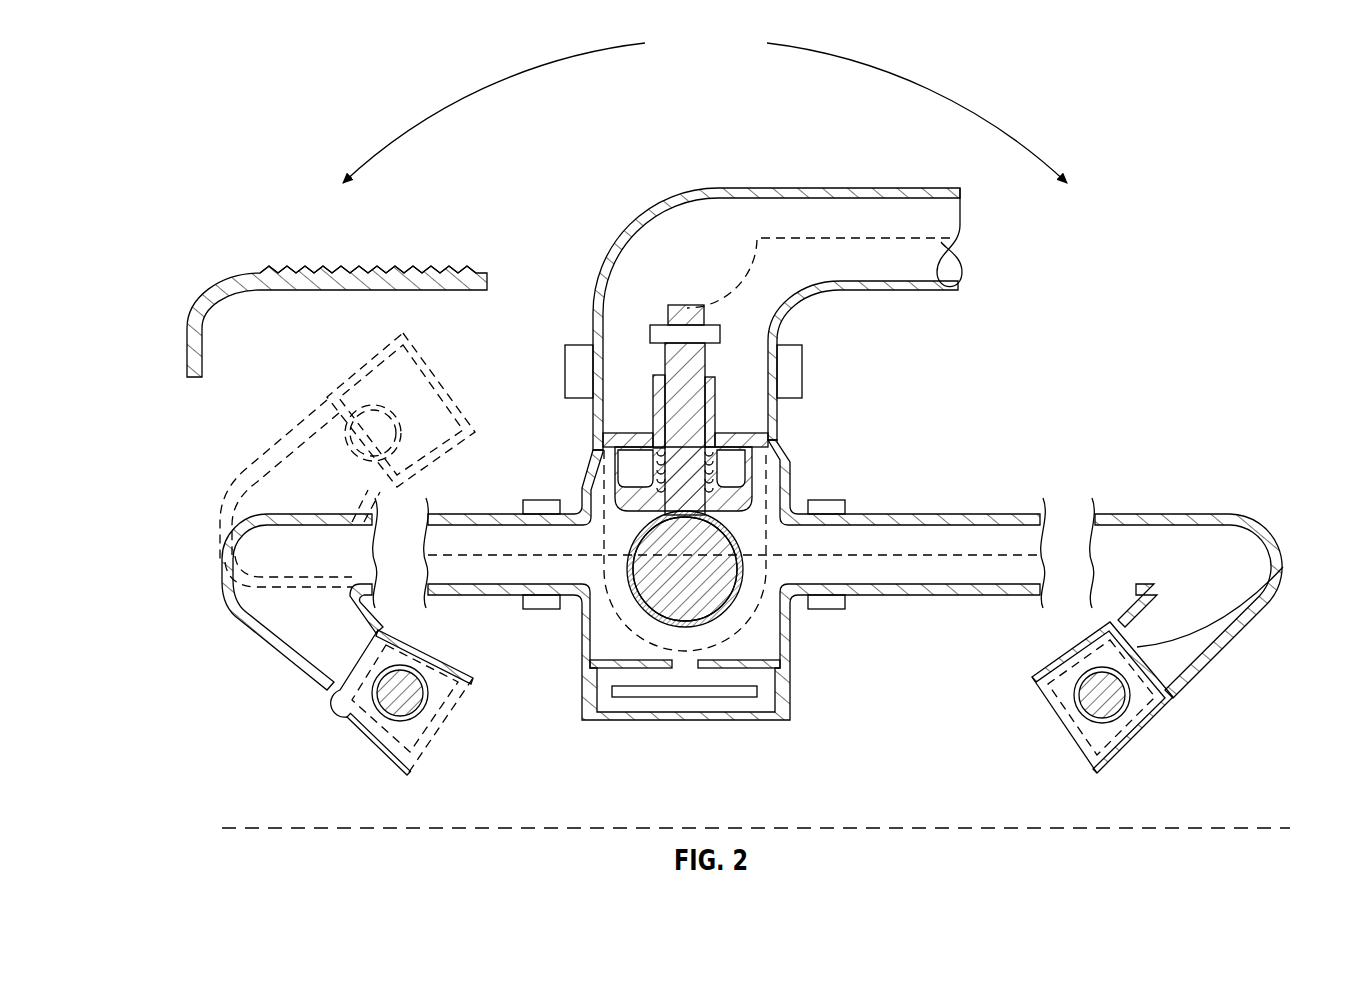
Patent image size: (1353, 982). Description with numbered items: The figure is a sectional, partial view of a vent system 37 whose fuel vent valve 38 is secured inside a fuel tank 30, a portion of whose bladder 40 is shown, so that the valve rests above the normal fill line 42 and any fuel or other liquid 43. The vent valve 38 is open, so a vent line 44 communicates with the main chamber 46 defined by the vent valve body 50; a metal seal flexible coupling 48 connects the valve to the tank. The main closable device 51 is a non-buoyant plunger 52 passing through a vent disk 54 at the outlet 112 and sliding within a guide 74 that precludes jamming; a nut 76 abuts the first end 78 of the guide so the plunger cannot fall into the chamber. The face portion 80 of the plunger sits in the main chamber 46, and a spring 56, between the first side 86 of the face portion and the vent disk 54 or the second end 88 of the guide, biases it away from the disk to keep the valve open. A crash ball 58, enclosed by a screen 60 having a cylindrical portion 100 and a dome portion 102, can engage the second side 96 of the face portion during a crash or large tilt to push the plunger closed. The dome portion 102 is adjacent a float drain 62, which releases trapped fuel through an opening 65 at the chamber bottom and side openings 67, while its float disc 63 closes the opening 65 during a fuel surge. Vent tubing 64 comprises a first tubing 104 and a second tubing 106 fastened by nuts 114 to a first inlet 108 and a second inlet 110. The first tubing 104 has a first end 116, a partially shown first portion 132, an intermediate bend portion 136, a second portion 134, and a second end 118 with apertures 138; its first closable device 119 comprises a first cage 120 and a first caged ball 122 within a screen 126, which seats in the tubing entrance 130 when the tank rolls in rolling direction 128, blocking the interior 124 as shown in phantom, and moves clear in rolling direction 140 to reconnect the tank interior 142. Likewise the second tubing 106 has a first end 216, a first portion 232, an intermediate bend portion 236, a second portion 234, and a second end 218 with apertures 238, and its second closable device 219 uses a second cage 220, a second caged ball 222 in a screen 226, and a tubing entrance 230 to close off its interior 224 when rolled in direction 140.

The fuel tank 30 is at (190, 353).
The vent system 37 is at (1105, 254).
The fuel vent valve 38 is at (802, 450).
The bladder 40 is at (456, 264).
The normal fuel tank fill line 42 is at (1247, 826).
The fuel or other liquid 43 is at (1018, 880).
The vent line 44 is at (878, 188).
The main chamber 46 is at (588, 660).
The metal seal flexible coupling 48 is at (803, 365).
The vent valve body 50 is at (603, 648).
The main closable device 51 is at (708, 352).
The plunger 52 is at (690, 305).
The vent disk 54 is at (604, 440).
The spring 56 is at (718, 458).
The crash ball 58 is at (732, 612).
The screen 60 is at (613, 617).
The float drain 62 is at (732, 700).
The float disc 63 is at (620, 697).
The vent tubing 64 is at (1013, 504).
The opening 65 is at (688, 668).
The side openings 67 is at (587, 697).
The guide 74 is at (650, 390).
The nut 76 is at (712, 327).
The first end of the guide 78 is at (657, 385).
The face portion 80 is at (655, 505).
The first side of the face portion 86 is at (640, 497).
The second end of the guide 88 is at (718, 428).
The second side of the face portion 96 is at (633, 515).
The cylindrical portion 100 is at (793, 492).
The dome portion 102 is at (728, 640).
The first tubing 104 is at (500, 513).
The second tubing 106 is at (930, 513).
The first inlet 108 is at (582, 605).
The second inlet 110 is at (800, 605).
The outlet 112 is at (735, 442).
The nuts 114 is at (840, 498).
The first end of the first tubing 116 is at (588, 584).
The second end of the first tubing 118 is at (412, 776).
The first closable device 119 is at (380, 765).
The first cage 120 is at (398, 770).
The first caged ball 122 is at (360, 740).
The interior of the first tubing 124 is at (230, 605).
The screen 126 is at (372, 710).
The rolling direction 128 is at (451, 104).
The tubing entrance 130 is at (337, 673).
The first portion 132 is at (428, 517).
The second portion 134 is at (280, 662).
The intermediate bend portion 136 is at (228, 548).
The apertures 138 is at (440, 727).
The rolling direction 140 is at (986, 118).
The interior of the fuel tank 142 is at (860, 776).
The first end of the second tubing 216 is at (786, 584).
The second end of the second tubing 218 is at (1095, 776).
The second closable device 219 is at (1045, 698).
The second cage 220 is at (1137, 753).
The second caged ball 222 is at (1178, 686).
The interior of the second tubing 224 is at (1232, 634).
The screen 226 is at (1131, 706).
The tubing entrance 230 is at (1284, 568).
The first portion 232 is at (980, 534).
The second portion 234 is at (1215, 670).
The intermediate bend portion 236 is at (1270, 540).
The apertures 238 is at (1073, 735).